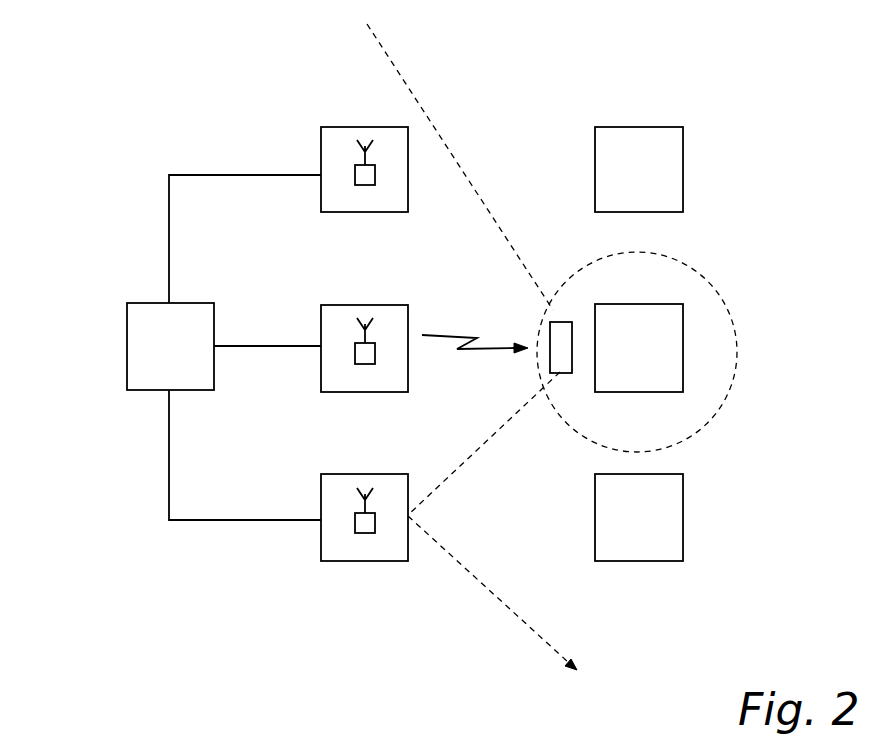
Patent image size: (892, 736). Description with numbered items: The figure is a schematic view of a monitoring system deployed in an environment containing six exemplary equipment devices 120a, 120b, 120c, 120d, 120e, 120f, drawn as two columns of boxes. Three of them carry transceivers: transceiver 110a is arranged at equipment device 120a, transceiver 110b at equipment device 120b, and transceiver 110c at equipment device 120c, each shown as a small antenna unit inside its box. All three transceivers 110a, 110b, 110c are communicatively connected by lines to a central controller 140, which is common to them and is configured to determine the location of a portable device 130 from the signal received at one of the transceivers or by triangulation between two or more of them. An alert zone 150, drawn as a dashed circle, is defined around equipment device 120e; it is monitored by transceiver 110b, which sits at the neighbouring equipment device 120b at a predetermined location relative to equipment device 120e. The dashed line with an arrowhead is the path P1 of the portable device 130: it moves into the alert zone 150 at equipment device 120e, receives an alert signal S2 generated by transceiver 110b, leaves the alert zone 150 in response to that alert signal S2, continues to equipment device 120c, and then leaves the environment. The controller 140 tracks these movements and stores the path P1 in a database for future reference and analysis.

The controller 140 is at (127, 345).
The equipment device 120a is at (349, 127).
The equipment device 120b is at (328, 305).
The equipment device 120c is at (340, 561).
The equipment device 120d is at (683, 148).
The equipment device 120e is at (683, 355).
The equipment device 120f is at (683, 513).
The transceiver 110a is at (365, 185).
The transceiver 110b is at (365, 364).
The transceiver 110c is at (365, 533).
The portable device 130 is at (565, 322).
The alert zone 150 is at (715, 287).
The path P1 is at (422, 105).
The alert signal S2 is at (493, 347).